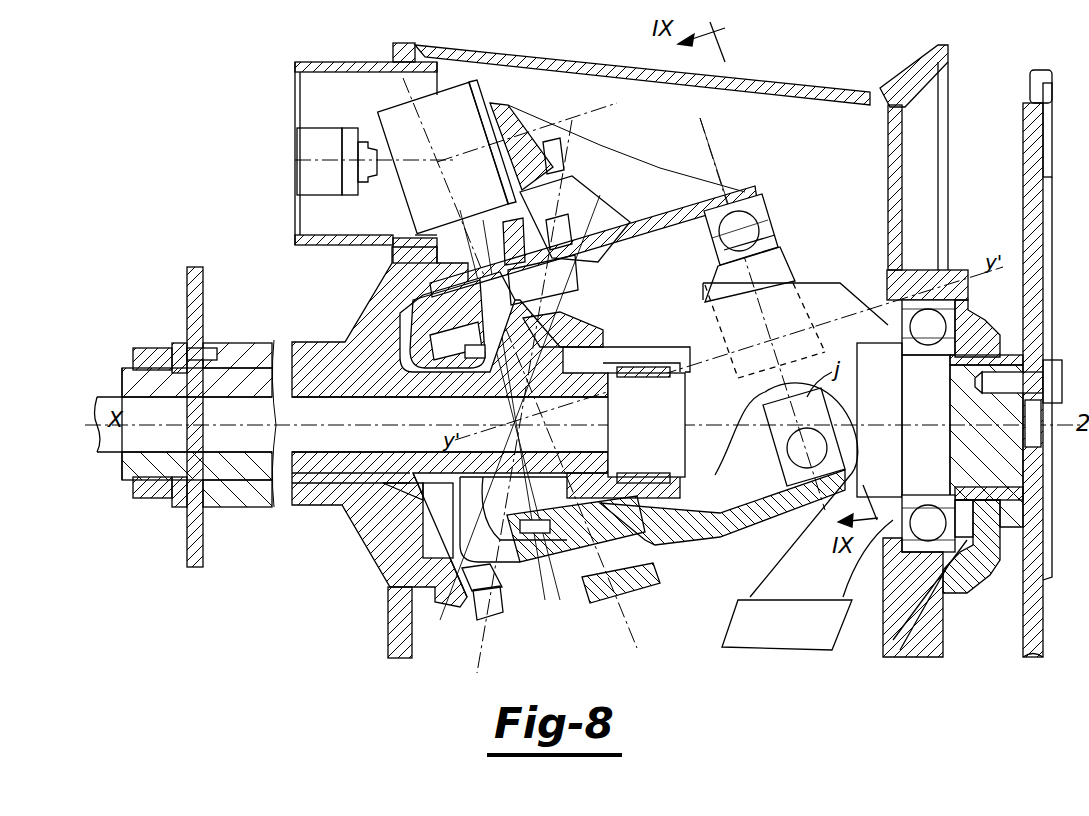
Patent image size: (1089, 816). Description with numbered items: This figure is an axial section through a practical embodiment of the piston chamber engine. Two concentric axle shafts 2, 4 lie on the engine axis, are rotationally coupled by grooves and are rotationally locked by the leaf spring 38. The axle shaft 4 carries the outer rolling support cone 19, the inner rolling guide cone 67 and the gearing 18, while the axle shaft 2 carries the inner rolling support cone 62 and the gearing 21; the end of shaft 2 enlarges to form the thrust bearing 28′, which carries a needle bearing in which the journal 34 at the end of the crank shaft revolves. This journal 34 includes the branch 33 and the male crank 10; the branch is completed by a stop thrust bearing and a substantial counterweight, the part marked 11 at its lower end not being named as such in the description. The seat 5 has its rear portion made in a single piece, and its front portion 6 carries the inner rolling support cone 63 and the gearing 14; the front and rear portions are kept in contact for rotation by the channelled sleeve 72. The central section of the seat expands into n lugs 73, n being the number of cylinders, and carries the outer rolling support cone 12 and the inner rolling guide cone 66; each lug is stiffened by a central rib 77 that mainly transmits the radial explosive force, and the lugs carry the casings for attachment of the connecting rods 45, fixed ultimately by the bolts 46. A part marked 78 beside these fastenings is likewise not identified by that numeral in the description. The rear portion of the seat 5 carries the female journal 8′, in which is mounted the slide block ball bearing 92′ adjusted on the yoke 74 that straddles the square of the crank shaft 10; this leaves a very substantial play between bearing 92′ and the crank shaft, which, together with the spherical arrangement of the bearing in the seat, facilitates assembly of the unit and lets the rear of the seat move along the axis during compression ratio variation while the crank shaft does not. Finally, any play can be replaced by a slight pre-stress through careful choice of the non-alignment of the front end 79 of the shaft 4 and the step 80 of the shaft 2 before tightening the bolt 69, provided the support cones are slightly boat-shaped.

The axle shaft 2 is at (317, 465).
The axle shaft 4 is at (245, 490).
The seat 5 is at (652, 215).
The front portion of the seat 6 is at (493, 538).
The female journal 8′ is at (747, 205).
The male crank 10 is at (790, 307).
The lever lobe 11 is at (826, 640).
The outer rolling support cone 12 is at (600, 575).
The gearing 14 is at (488, 318).
The gearing 18 is at (496, 610).
The outer rolling support cone 19 is at (492, 580).
The gearing 21 is at (570, 323).
The thrust bearing 28′ is at (670, 348).
The branch 33 is at (707, 310).
The journal 34 is at (668, 417).
The leaf spring 38 is at (198, 290).
The connecting rods 45 is at (403, 117).
The bolts 46 is at (580, 138).
The inner rolling support cone 62 is at (510, 397).
The inner rolling support cone 63 is at (453, 393).
The inner rolling guide cone 66 is at (570, 560).
The inner rolling guide cone 67 is at (470, 565).
The bolt 69 is at (150, 350).
The channelled sleeve 72 is at (573, 293).
The lugs 73 is at (490, 113).
The yoke 74 is at (783, 270).
The central rib 77 is at (697, 147).
The bracket 78 is at (590, 190).
The front end of the shaft 79 is at (212, 352).
The step 80 is at (215, 372).
The slide block ball bearing 92′ is at (763, 243).